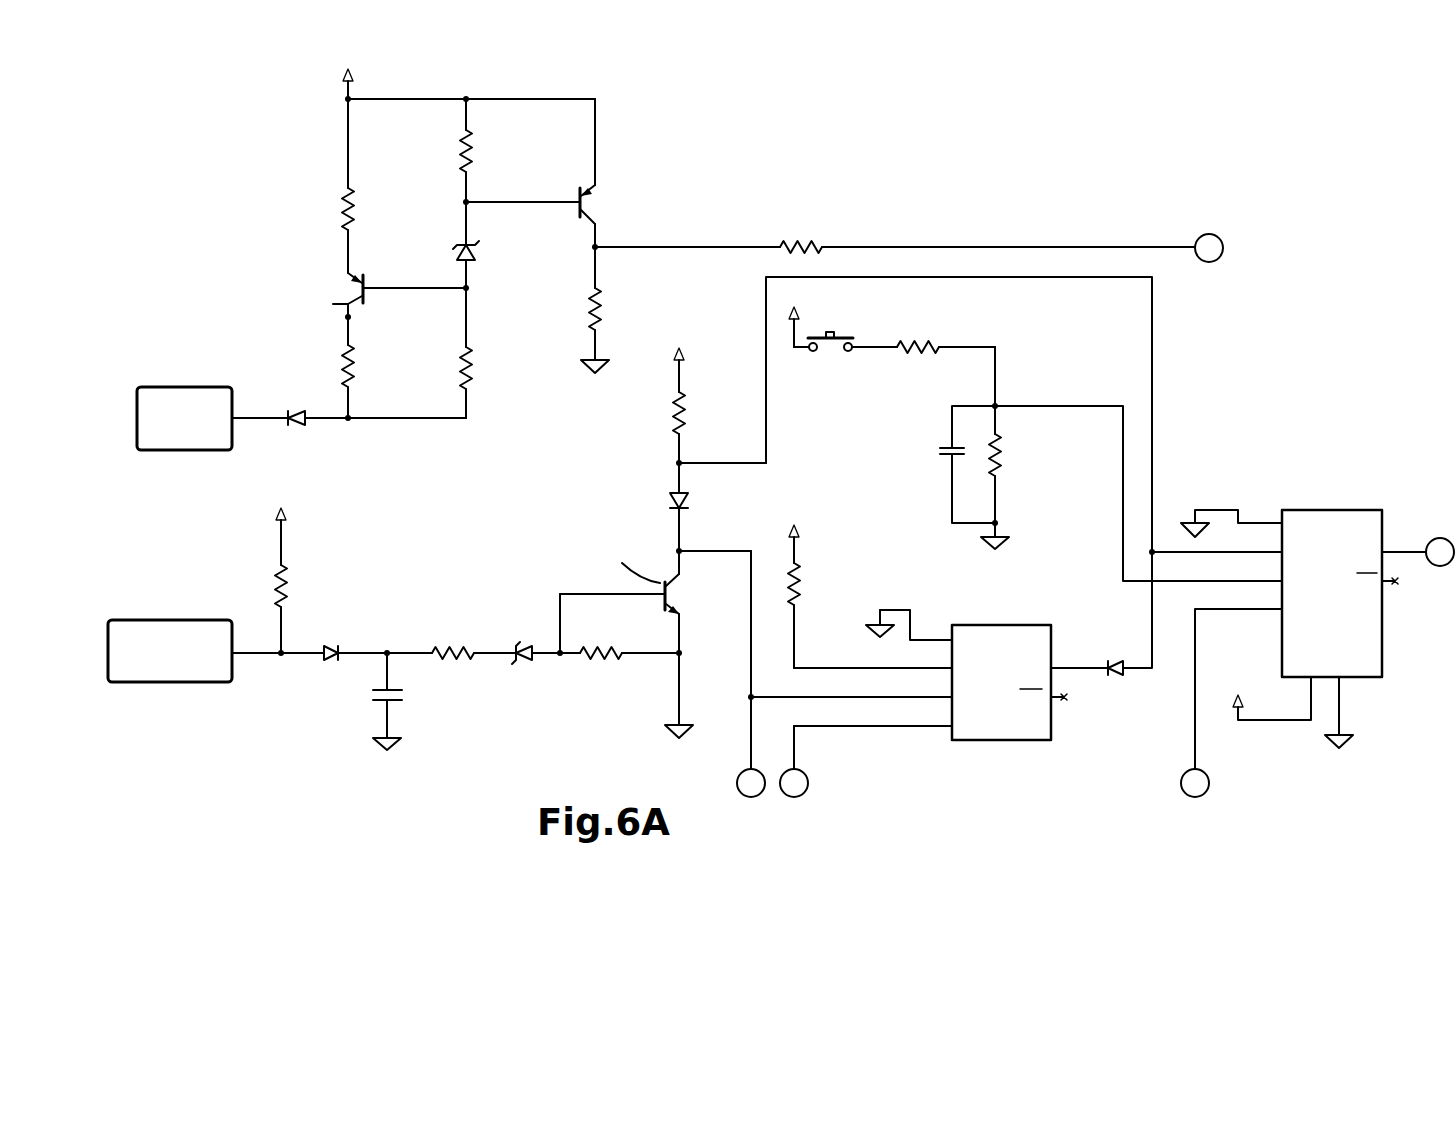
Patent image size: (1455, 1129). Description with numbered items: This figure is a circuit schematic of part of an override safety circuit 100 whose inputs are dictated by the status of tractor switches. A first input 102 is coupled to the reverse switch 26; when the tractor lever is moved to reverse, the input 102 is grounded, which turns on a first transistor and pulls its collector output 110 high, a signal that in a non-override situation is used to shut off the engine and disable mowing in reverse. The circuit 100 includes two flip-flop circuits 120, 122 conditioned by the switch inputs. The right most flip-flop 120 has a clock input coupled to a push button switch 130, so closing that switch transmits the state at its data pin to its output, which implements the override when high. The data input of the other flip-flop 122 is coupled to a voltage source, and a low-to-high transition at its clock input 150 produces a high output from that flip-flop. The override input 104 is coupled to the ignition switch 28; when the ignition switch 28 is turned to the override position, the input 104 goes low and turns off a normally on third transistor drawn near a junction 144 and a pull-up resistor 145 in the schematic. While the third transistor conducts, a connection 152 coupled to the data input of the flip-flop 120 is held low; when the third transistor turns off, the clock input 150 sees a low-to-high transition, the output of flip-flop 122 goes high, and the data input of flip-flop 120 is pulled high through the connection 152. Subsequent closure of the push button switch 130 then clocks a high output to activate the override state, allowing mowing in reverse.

The override safety circuit 100 is at (1040, 153).
The reverse switch 26 is at (153, 397).
The first input 102 is at (243, 418).
The ignition switch 28 is at (167, 673).
The override input 104 is at (250, 655).
The collector output 110 is at (690, 247).
The connection 152 is at (1040, 277).
The junction node 144 is at (679, 463).
The pull-up resistor 145 is at (684, 353).
The push button switch 130 is at (848, 340).
The clock input 150 is at (877, 699).
The flip-flop circuit 122 is at (1043, 733).
The flip-flop circuit 120 is at (1375, 672).